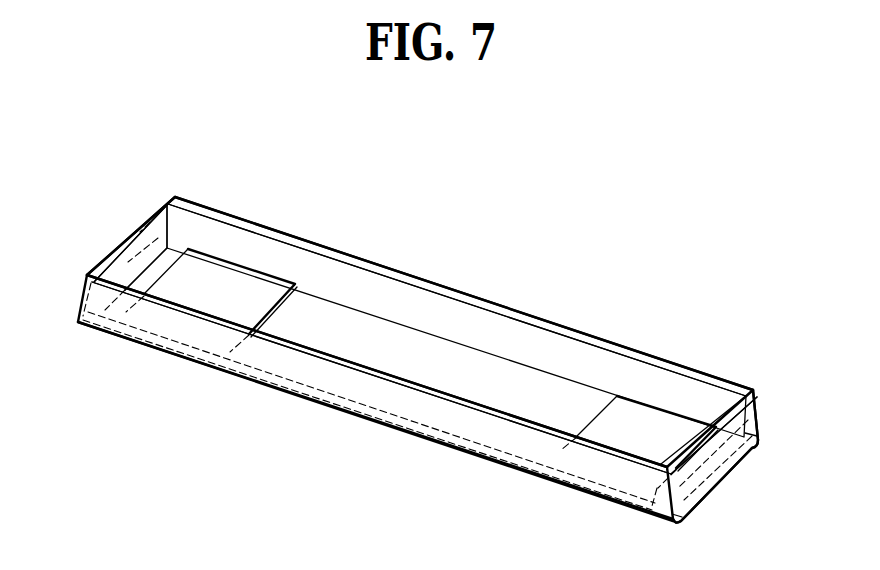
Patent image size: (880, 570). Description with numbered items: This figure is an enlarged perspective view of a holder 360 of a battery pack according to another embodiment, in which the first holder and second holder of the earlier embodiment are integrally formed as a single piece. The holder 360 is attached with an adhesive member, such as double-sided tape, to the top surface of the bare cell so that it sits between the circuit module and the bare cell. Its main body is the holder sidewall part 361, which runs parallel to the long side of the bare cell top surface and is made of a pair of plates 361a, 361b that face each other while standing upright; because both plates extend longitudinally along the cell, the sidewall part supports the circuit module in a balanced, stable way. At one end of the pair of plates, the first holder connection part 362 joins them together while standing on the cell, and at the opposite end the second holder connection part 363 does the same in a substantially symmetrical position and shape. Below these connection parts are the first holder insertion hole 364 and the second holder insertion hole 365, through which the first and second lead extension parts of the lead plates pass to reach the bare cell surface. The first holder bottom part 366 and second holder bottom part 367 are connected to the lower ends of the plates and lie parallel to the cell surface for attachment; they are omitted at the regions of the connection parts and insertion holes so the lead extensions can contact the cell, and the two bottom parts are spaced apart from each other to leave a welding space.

The holder 360 is at (438, 356).
The holder sidewall part 361 is at (420, 316).
The plate 361a is at (392, 377).
The plate 361b is at (360, 258).
The first holder connection part 362 is at (762, 417).
The second holder connection part 363 is at (100, 257).
The first holder insertion hole 364 is at (720, 474).
The second holder insertion hole 365 is at (155, 240).
The first holder bottom part 366 is at (648, 418).
The second holder bottom part 367 is at (230, 270).